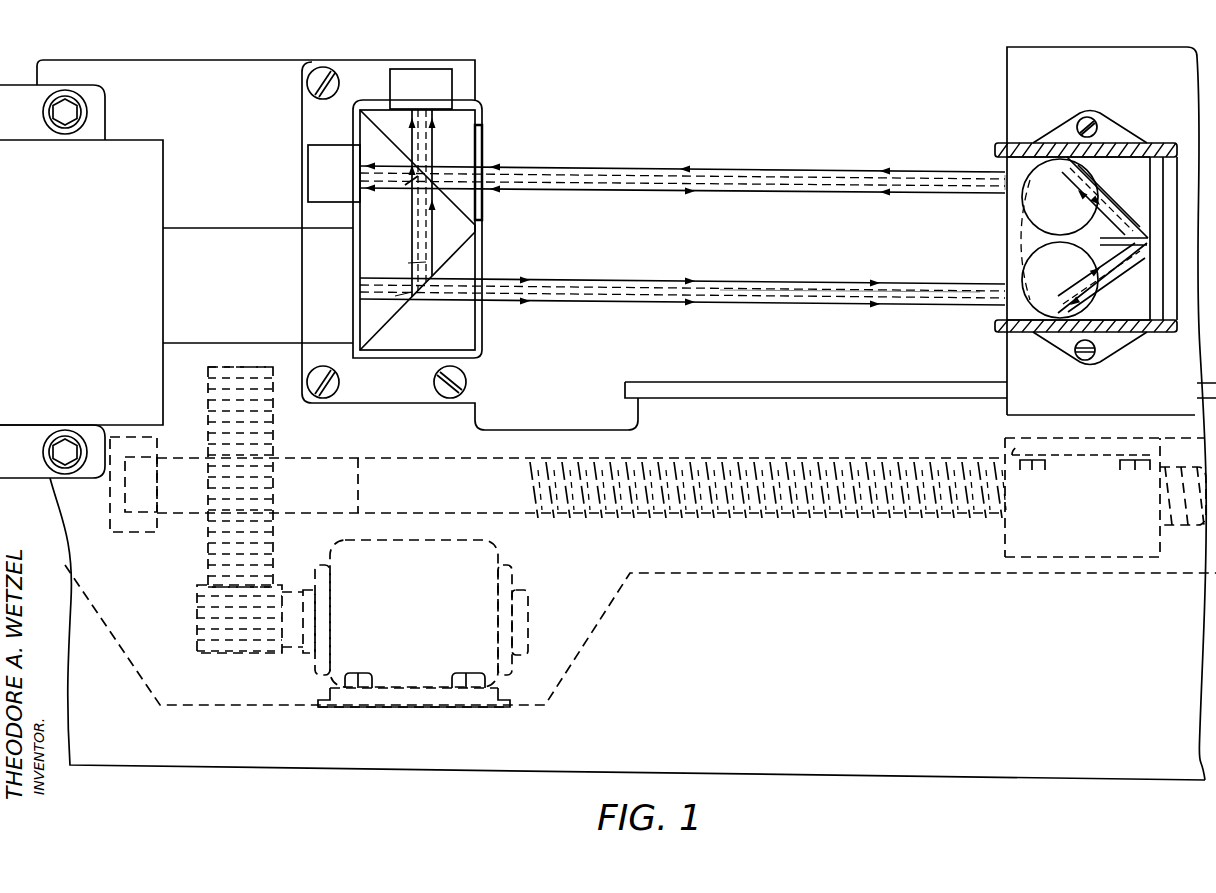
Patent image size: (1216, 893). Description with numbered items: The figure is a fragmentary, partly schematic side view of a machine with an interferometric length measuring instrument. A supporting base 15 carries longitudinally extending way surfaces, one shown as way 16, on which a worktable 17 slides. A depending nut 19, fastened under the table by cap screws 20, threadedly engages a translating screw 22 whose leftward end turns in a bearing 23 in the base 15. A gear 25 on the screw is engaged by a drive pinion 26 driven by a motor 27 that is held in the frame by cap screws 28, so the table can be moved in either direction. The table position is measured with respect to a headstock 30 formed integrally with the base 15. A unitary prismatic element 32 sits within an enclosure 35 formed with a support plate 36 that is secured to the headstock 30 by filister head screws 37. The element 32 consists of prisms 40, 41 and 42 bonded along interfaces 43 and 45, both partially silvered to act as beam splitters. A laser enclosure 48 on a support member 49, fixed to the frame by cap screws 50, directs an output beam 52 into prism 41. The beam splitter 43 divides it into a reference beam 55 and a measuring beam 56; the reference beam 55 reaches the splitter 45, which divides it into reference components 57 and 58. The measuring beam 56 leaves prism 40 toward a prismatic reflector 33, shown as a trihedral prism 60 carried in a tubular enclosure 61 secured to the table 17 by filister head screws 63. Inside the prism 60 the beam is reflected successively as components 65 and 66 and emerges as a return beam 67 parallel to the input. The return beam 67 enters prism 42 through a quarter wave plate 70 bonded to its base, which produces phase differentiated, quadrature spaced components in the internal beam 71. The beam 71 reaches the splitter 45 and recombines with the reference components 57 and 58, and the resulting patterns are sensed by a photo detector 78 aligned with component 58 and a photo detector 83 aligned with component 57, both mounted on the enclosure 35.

The supporting base 15 is at (928, 760).
The way surface 16 is at (835, 386).
The worktable 17 is at (1098, 58).
The nut 19 is at (1035, 530).
The cap screws 20 is at (1040, 470).
The translating screw 22 is at (748, 515).
The bearing 23 is at (142, 520).
The gear 25 is at (212, 385).
The drive pinion 26 is at (222, 645).
The motor 27 is at (488, 568).
The cap screws 28 is at (358, 672).
The headstock 30 is at (632, 240).
The unitary prismatic element 32 is at (484, 268).
The prismatic reflector 33 is at (1000, 218).
The enclosure 35 is at (427, 198).
The support plate 36 is at (318, 116).
The filister head screws 37 is at (318, 72).
The prism 40 is at (465, 335).
The prism 41 is at (427, 232).
The prism 42 is at (460, 108).
The beam splitting surface 43 is at (388, 332).
The beam splitting surface 45 is at (480, 216).
The laser enclosure 48 is at (178, 240).
The support member 49 is at (130, 160).
The cap screws 50 is at (68, 118).
The output beam 52 is at (400, 294).
The split beam 55 is at (420, 262).
The split beam 56 is at (745, 295).
The reference beam component 57 is at (420, 152).
The reference beam component 58 is at (405, 185).
The trihedral prism 60 is at (1067, 237).
The tubular enclosure 61 is at (1172, 147).
The filister head screws 63 is at (1092, 120).
The beam component 65 is at (1100, 270).
The beam component 66 is at (1098, 215).
The output beam 67 is at (790, 178).
The quarter wave plate 70 is at (492, 137).
The internal beam 71 is at (470, 172).
The photo detector 78 is at (318, 150).
The photo detector 83 is at (402, 78).